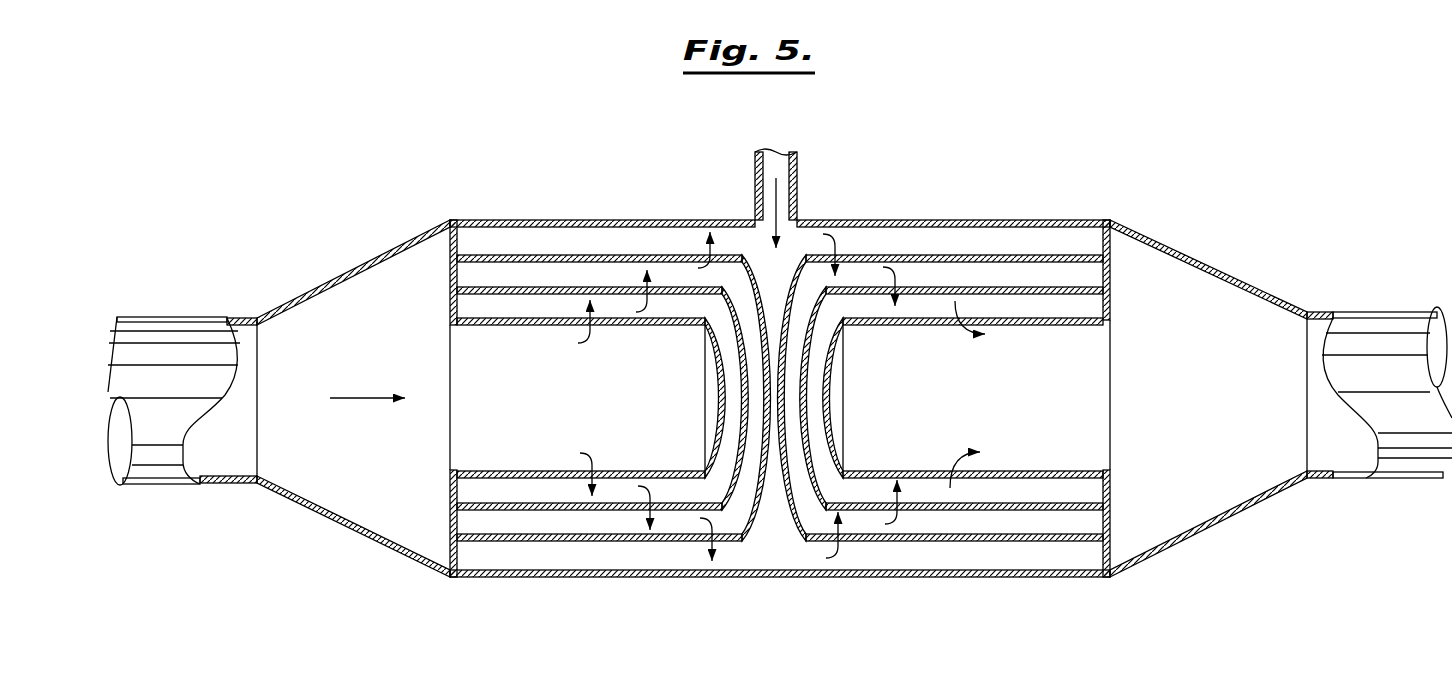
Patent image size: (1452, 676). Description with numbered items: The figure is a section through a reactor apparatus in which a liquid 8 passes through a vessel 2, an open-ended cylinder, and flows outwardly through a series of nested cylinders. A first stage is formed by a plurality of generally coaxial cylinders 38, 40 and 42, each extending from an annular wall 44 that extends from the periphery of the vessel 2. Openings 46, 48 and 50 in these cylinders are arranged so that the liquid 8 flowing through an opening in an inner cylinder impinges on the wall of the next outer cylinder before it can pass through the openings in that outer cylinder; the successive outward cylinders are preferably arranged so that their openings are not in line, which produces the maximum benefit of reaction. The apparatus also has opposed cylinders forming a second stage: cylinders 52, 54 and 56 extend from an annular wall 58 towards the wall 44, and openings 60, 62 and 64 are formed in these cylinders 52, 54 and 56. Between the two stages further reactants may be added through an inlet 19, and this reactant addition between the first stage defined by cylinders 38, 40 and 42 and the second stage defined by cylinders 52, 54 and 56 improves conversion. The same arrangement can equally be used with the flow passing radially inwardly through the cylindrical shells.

The vessel 2 is at (860, 222).
The liquid 8 is at (322, 366).
The inlet 19 is at (800, 165).
The cylinder 38 is at (498, 326).
The cylinder 40 is at (498, 286).
The cylinder 42 is at (561, 286).
The annular wall 44 is at (448, 279).
The openings 46 is at (628, 306).
The openings 48 is at (698, 280).
The openings 50 is at (629, 256).
The cylinder 52 is at (1040, 321).
The cylinder 54 is at (1108, 276).
The cylinder 56 is at (1041, 254).
The annular wall 58 is at (1108, 297).
The openings 60 is at (917, 321).
The openings 62 is at (935, 286).
The openings 64 is at (924, 256).